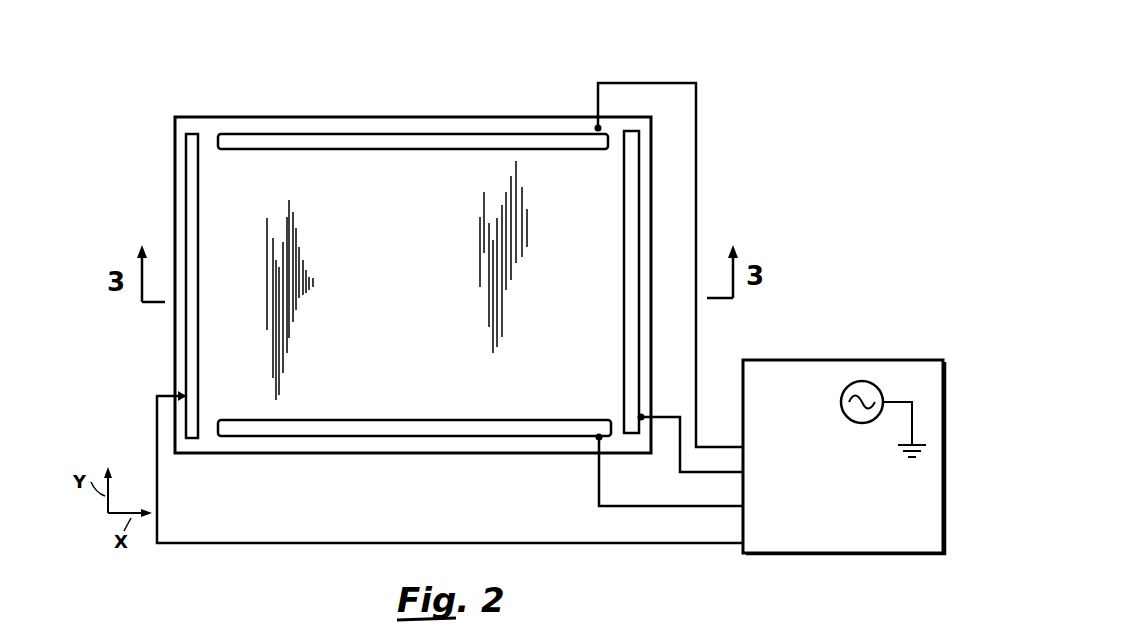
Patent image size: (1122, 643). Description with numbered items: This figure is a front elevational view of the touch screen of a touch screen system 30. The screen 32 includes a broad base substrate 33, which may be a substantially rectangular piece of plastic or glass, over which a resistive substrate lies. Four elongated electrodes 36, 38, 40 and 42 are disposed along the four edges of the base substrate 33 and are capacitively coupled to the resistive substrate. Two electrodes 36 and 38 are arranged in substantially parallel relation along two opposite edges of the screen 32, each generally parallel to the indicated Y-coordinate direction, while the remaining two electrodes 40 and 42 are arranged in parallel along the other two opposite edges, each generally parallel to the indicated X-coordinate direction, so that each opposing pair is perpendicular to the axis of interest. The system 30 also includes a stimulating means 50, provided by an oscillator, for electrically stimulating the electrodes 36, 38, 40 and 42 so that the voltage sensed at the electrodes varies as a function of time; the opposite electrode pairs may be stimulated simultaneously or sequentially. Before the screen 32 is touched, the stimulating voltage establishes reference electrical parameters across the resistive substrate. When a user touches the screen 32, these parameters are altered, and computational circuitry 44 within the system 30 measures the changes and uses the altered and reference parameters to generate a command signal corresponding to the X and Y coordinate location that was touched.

The touch screen system 30 is at (712, 112).
The screen 32 is at (556, 120).
The base substrate 33 is at (241, 118).
The electrode 36 is at (192, 173).
The electrode 38 is at (652, 222).
The electrode 40 is at (453, 140).
The electrode 42 is at (488, 423).
The computational circuitry 44 is at (773, 360).
The stimulating means 50 is at (865, 381).